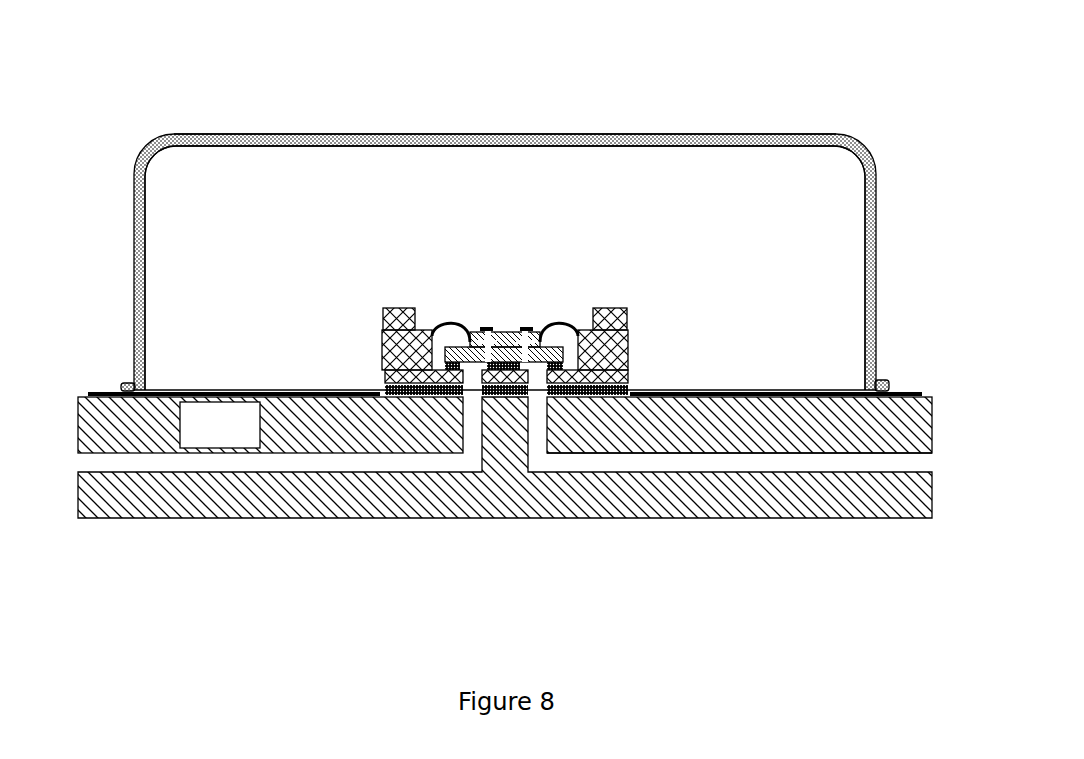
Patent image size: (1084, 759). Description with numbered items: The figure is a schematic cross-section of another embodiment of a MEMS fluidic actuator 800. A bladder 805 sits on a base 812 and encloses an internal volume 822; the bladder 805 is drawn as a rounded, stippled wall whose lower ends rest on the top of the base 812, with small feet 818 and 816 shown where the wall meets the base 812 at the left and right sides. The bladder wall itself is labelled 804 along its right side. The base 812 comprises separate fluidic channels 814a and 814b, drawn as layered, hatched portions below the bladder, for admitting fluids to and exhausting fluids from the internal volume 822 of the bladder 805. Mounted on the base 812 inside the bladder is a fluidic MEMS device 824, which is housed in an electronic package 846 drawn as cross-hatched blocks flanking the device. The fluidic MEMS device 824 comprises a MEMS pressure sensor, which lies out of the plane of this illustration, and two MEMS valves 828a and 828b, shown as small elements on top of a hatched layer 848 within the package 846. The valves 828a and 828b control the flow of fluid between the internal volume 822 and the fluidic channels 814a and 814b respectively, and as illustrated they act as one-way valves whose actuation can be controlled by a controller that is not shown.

The MEMS fluidic actuator 800 is at (474, 107).
The lid 804 is at (868, 215).
The bladder 805 is at (661, 129).
The internal volume 822 is at (505, 268).
The lid flange / seal 818 is at (128, 386).
The lid flange / seal 816 is at (902, 390).
The base 812 is at (505, 425).
The fluidic channel 814a is at (282, 462).
The fluidic channel 814b is at (722, 463).
The electronic package 846 is at (395, 372).
The device layer 848 is at (452, 351).
The fluidic MEMS device 824 is at (513, 305).
The MEMS valve 828a is at (483, 324).
The MEMS valve 828b is at (529, 327).